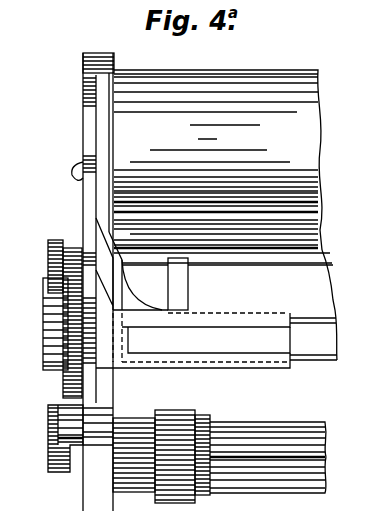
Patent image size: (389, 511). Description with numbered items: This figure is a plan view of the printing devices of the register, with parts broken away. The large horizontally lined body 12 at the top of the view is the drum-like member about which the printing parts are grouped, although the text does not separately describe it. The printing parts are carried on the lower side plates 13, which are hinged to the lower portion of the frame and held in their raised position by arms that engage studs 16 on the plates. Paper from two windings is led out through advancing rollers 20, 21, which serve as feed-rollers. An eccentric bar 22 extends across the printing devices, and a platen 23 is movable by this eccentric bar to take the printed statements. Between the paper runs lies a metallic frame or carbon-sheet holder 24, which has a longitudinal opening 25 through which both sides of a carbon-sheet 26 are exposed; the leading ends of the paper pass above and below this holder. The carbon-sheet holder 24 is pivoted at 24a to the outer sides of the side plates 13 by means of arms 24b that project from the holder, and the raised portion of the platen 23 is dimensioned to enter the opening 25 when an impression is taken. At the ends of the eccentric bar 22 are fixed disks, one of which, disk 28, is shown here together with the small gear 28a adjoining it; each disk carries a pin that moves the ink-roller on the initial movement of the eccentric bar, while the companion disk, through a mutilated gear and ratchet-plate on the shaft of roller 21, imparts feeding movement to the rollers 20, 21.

The drum 12 is at (320, 133).
The lower side plate 13 is at (105, 387).
The stud 16 is at (48, 425).
The advancing roller 20 is at (322, 437).
The advancing roller 21 is at (322, 480).
The eccentric bar 22 is at (229, 305).
The platen 23 is at (313, 349).
The carbon-sheet holder 24 is at (218, 322).
The pivot 24a is at (83, 160).
The arm 24b is at (96, 203).
The longitudinal opening 25 is at (208, 362).
The carbon-sheet 26 is at (210, 366).
The disk 28 is at (65, 378).
The pinion 28a is at (48, 260).